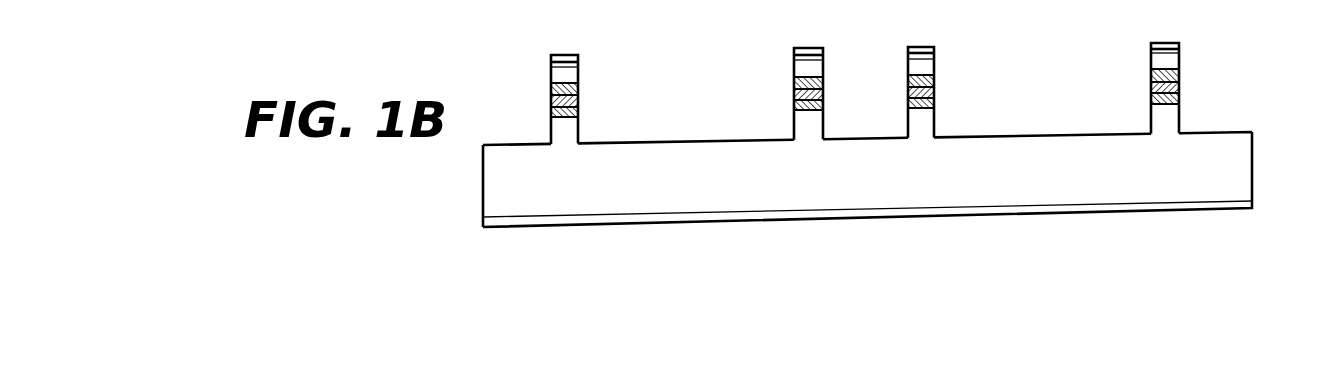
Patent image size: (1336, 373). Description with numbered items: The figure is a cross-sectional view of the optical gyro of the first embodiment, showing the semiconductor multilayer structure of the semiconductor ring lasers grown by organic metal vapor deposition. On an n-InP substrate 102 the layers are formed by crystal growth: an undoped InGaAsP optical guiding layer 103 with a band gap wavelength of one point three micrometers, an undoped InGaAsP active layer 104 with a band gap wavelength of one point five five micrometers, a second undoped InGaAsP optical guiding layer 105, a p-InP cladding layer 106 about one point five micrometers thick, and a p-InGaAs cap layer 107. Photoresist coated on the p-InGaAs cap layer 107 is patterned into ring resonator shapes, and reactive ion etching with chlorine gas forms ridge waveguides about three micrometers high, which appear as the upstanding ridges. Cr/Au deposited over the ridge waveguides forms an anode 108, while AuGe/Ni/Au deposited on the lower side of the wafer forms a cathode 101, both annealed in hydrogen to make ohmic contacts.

The cathode 101 is at (1205, 206).
The n-InP substrate 102 is at (1123, 198).
The first layer 103 is at (1180, 99).
The undoped InGaAsP active layer 104 is at (1151, 88).
The third layer 105 is at (1180, 74).
The p-InP cladding layer 106 is at (1175, 61).
The p-InGaAs cap layer 107 is at (1151, 53).
The anode 108 is at (1163, 43).